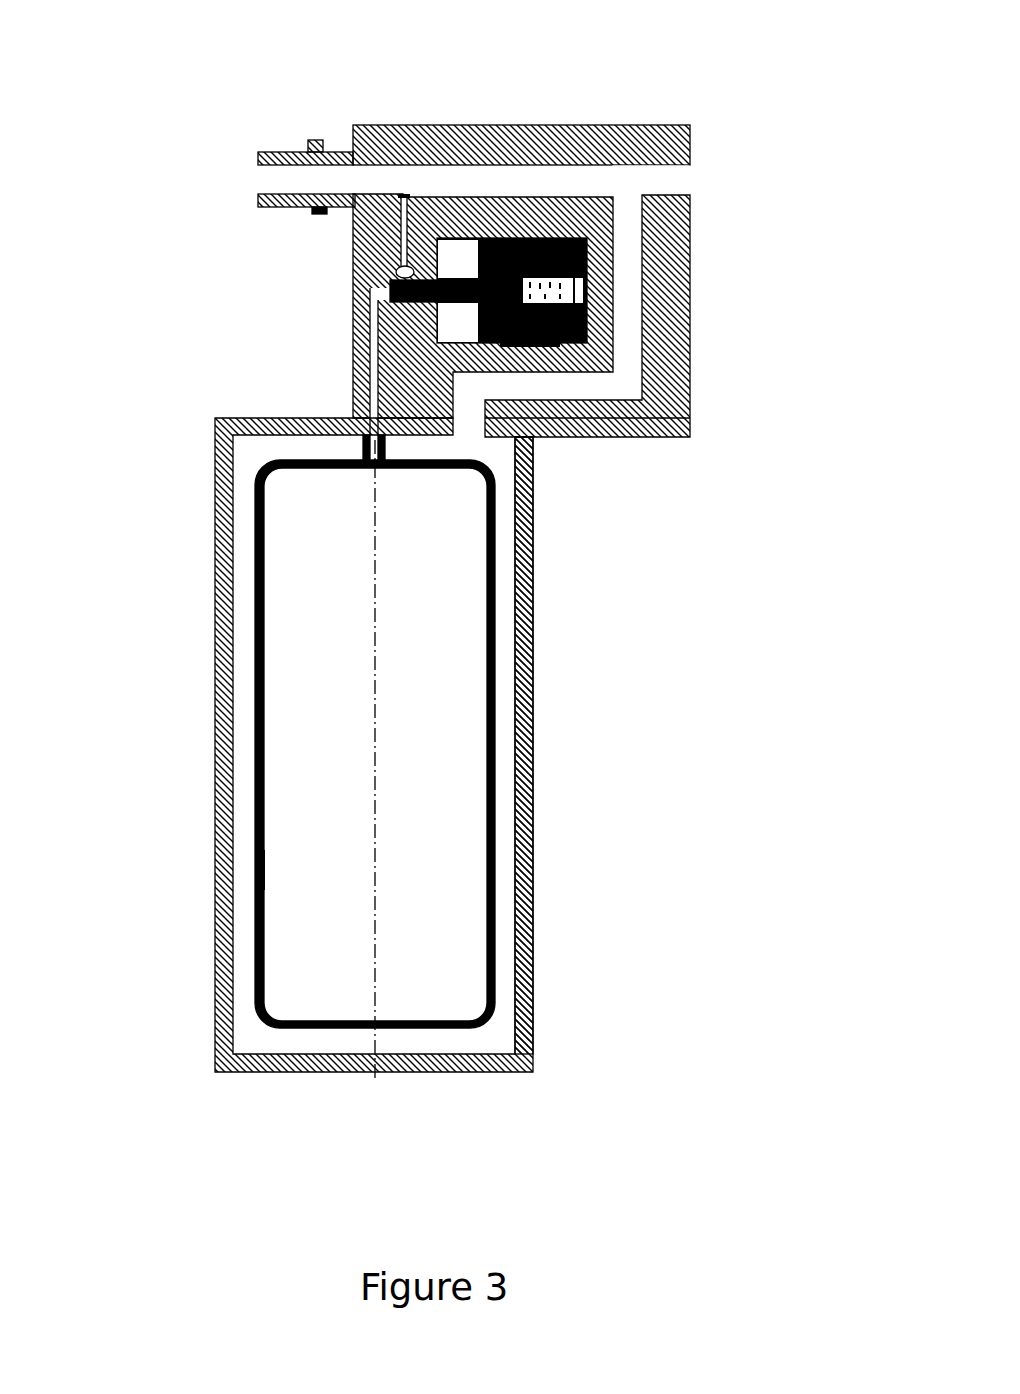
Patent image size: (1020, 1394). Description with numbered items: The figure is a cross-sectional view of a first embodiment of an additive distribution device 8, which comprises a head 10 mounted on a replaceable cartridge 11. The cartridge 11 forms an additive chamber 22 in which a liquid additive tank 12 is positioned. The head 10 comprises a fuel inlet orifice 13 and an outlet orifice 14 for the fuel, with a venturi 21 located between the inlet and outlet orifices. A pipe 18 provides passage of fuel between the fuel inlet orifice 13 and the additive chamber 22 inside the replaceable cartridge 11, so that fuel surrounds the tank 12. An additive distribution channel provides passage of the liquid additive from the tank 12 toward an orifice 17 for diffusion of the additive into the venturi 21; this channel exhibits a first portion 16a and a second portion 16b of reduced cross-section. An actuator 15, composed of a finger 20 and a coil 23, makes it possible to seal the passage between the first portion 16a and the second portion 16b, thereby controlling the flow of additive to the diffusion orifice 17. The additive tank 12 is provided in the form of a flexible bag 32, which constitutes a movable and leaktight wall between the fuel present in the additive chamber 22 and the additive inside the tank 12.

The device for distribution of an additive 8 is at (608, 777).
The head 10 is at (600, 140).
The replaceable cartridge 11 is at (215, 682).
The liquid additive tank 12 is at (342, 637).
The fuel inlet orifice 13 is at (672, 175).
The outlet orifice for the fuel 14 is at (278, 177).
The actuator 15 is at (468, 307).
The first portion of the additive distribution channel 16a is at (366, 397).
The second portion of the additive distribution channel 16b is at (332, 212).
The orifice for diffusion of additive 17 is at (405, 192).
The pipe 18 is at (623, 320).
The finger 20 is at (353, 285).
The venturi 21 is at (405, 190).
The additive chamber 22 is at (498, 667).
The coil 23 is at (527, 350).
The flexible bag 32 is at (258, 868).